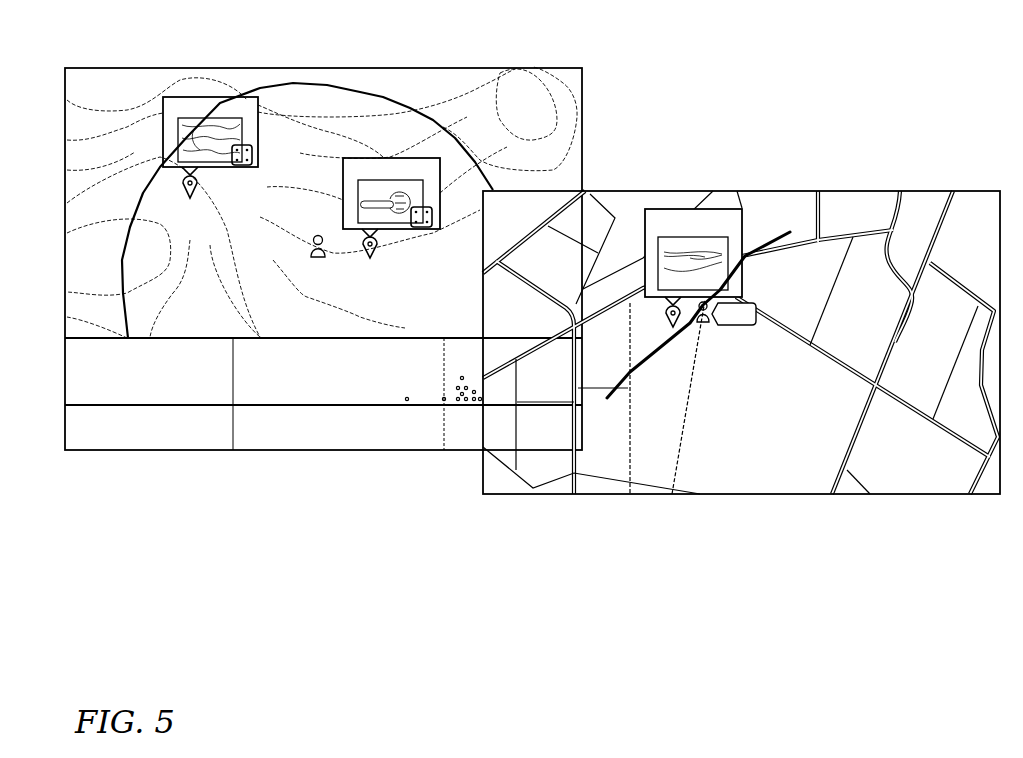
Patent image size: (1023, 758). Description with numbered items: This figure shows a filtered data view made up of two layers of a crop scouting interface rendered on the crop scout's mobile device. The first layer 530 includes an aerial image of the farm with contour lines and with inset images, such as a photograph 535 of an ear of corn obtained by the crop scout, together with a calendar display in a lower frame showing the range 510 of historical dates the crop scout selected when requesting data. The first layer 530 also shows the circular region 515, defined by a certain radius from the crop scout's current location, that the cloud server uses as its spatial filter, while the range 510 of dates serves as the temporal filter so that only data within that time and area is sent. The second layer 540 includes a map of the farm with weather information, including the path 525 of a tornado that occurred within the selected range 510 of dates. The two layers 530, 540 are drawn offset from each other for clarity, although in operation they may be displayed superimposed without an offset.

The range of historical dates 510 is at (445, 463).
The circular region 515 is at (268, 88).
The path of a tornado 525 is at (657, 352).
The first layer 530 is at (583, 129).
The photograph 535 is at (342, 216).
The second layer 540 is at (769, 190).